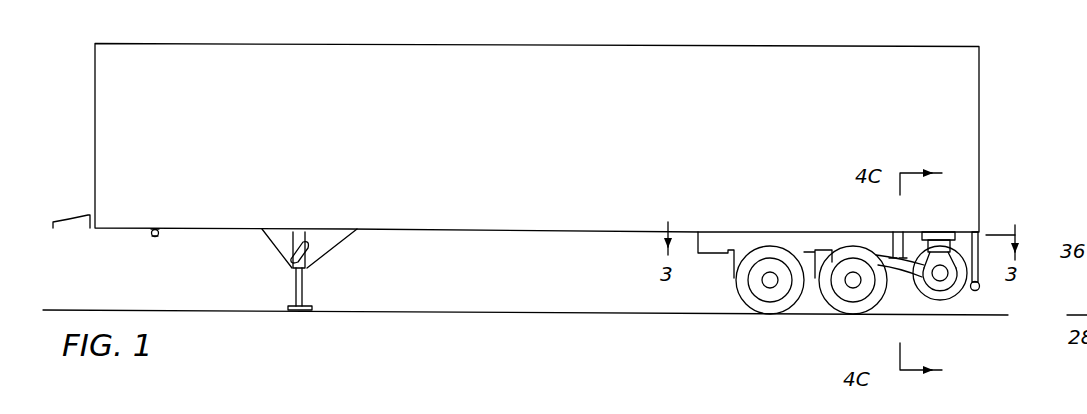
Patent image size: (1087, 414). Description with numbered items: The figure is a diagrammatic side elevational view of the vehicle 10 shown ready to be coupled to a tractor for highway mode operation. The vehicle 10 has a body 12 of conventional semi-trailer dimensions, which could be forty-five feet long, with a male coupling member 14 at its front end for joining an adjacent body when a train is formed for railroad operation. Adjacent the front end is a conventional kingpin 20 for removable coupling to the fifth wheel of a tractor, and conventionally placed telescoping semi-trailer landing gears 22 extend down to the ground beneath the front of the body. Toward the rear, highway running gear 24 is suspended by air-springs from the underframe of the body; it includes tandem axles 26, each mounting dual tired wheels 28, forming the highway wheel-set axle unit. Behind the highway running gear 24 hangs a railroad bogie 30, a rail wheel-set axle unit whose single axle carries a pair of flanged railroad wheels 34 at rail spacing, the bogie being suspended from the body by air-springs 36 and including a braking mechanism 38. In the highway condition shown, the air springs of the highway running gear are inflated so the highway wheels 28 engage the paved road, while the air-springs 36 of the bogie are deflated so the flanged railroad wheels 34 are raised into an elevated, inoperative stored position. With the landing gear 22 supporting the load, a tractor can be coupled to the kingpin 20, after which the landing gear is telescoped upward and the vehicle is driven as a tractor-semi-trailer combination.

The vehicle 10 is at (570, 138).
The body 12 is at (975, 72).
The male coupling member 14 is at (68, 229).
The kingpin 20 is at (159, 236).
The landing gears 22 is at (307, 290).
The highway running gear 24 is at (718, 330).
The tandem axles 26 is at (764, 279).
The dual tired wheels 28 is at (748, 300).
The railroad bogie 30 is at (973, 302).
The flanged railroad wheels 34 is at (945, 300).
The air-springs 36 is at (948, 232).
The braking mechanism 38 is at (904, 221).